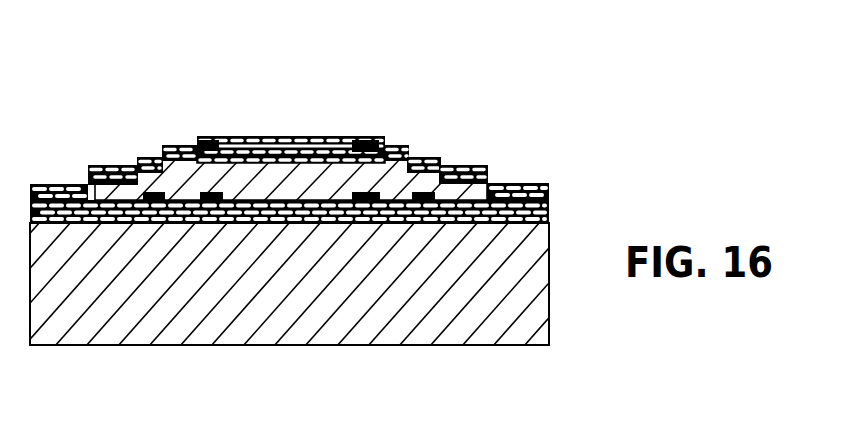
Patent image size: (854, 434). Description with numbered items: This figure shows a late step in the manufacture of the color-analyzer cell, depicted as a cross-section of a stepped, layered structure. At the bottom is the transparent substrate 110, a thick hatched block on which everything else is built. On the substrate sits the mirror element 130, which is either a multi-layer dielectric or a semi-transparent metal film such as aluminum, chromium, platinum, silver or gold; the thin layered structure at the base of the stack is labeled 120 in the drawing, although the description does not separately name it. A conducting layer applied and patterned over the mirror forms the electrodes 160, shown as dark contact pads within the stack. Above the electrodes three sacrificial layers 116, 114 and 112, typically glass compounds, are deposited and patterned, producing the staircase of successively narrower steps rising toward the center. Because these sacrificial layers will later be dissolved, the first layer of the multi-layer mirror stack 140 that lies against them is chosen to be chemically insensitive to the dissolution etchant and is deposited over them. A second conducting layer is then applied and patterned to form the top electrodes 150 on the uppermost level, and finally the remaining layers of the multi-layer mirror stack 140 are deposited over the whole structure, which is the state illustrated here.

The transparent substrate 110 is at (483, 327).
The buffer layer stack 120 is at (97, 418).
The mirror element 130 is at (554, 200).
The multi-layer mirror stack 140 is at (66, 186).
The top electrodes 150 is at (210, 136).
The electrodes 160 is at (233, 180).
The sacrificial layer 112 is at (344, 135).
The sacrificial layer 114 is at (407, 165).
The sacrificial layer 116 is at (484, 169).